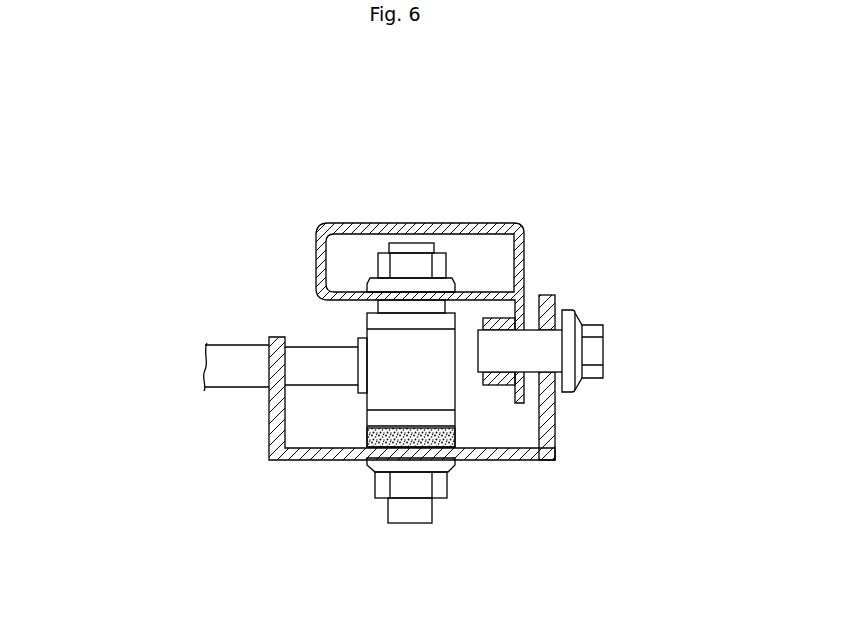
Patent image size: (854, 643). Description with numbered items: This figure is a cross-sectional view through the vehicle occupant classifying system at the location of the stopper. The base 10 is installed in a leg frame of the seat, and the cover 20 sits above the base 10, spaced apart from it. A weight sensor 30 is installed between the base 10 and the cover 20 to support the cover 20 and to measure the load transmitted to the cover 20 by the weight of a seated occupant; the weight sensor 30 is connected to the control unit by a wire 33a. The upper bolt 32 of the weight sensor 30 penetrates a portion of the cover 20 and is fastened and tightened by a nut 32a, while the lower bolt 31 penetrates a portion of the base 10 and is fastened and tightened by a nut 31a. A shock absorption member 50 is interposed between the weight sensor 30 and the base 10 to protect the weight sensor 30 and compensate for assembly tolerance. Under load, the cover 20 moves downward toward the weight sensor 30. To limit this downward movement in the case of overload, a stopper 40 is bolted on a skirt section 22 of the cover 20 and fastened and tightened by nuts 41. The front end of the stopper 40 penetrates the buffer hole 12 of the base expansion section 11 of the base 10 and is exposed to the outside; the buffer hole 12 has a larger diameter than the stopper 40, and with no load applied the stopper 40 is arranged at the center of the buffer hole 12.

The base 10 is at (477, 462).
The base expansion section 11 is at (548, 408).
The buffer hole 12 is at (552, 324).
The cover 20 is at (314, 230).
The skirt section 22 is at (541, 294).
The weight sensor 30 is at (388, 390).
The lower bolt 31 is at (418, 515).
The nut 31a is at (386, 485).
The upper bolt 32 is at (410, 247).
The nut 32a is at (437, 262).
The wire 33a is at (207, 362).
The stopper 40 is at (595, 350).
The nuts 41 is at (498, 386).
The shock absorption member 50 is at (360, 452).